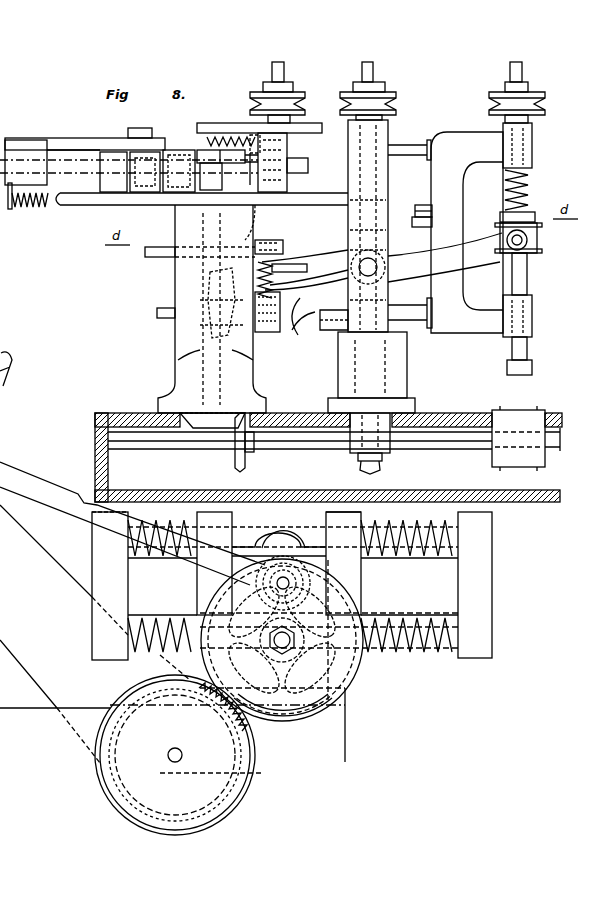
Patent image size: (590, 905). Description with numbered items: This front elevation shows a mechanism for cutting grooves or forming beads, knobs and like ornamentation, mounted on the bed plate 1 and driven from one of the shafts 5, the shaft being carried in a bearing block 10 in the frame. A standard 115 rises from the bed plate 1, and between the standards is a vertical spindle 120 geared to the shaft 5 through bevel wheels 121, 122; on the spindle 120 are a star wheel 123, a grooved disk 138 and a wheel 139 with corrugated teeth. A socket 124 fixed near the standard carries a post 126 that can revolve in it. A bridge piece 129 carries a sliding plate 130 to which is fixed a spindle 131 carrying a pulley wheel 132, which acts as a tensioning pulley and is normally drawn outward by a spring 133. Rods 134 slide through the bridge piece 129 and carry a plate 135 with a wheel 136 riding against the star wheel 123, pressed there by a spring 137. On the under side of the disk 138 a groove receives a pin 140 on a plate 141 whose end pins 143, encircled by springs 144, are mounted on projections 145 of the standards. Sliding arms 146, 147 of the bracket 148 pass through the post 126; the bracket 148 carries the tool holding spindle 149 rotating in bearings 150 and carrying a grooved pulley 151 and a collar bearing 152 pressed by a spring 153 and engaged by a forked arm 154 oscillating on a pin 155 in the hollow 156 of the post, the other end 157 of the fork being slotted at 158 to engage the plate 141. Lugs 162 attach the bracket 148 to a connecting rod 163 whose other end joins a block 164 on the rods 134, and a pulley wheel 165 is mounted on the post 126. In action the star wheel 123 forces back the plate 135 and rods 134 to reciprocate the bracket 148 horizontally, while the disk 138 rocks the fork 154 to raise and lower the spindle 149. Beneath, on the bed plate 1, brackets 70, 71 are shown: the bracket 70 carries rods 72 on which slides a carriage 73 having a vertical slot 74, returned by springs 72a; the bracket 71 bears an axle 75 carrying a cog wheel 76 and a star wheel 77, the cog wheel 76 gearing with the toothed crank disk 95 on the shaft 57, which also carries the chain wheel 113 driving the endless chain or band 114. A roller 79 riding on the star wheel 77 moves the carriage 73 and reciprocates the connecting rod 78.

The bed plate 1 is at (115, 413).
The shaft 5 is at (462, 443).
The bearing block 10 is at (496, 456).
The shaft 57 is at (168, 756).
The bracket 70 is at (95, 612).
The bracket 71 is at (348, 706).
The rods 72 is at (158, 632).
The springs 72a is at (195, 526).
The carriage 73 is at (340, 522).
The vertical slot 74 is at (285, 568).
The axle 75 is at (292, 645).
The cog wheel 76 is at (312, 713).
The star wheel 77 is at (352, 677).
The connecting rod 78 is at (25, 478).
The roller 79 is at (275, 546).
The crank disk 95 is at (240, 734).
The chain wheel 113 is at (225, 773).
The endless chain or band 114 is at (48, 562).
The standard 115 is at (248, 388).
The vertical spindle 120 is at (210, 340).
The bevel wheel 121 is at (236, 445).
The bevel wheel 122 is at (195, 428).
The star wheel 123 is at (207, 143).
The socket 124 is at (400, 385).
The post 126 is at (380, 124).
The bridge piece 129 is at (287, 120).
The sliding plate 130 is at (300, 126).
The spindle 131 is at (283, 77).
The pulley wheel 132 is at (303, 95).
The spring 133 is at (238, 131).
The rods 134 is at (90, 167).
The plate 135 is at (75, 139).
The wheel 136 is at (150, 137).
The spring 137 is at (33, 207).
The disk 138 is at (157, 258).
The wheel with corrugated teeth 139 is at (157, 313).
The pin 140 is at (272, 258).
The plate 141 is at (320, 266).
The pins 143 is at (278, 295).
The springs 144 is at (295, 330).
The projections 145 is at (265, 333).
The sliding arm 146 is at (407, 143).
The sliding arm 147 is at (410, 312).
The bracket 148 is at (470, 133).
The tool holding spindle 149 is at (530, 281).
The bearing 150 is at (530, 145).
The grooved pulley 151 is at (535, 88).
The collar bearing 152 is at (528, 213).
The spring 153 is at (530, 195).
The forked arm 154 is at (540, 241).
The pin 155 is at (372, 266).
The chamber or hollow 156 is at (392, 207).
The other end of the fork 157 is at (306, 250).
The slot 158 is at (310, 300).
The lugs 162 is at (426, 205).
The connecting rod 163 is at (333, 226).
The block 164 is at (172, 185).
The pulley wheel 165 is at (385, 83).